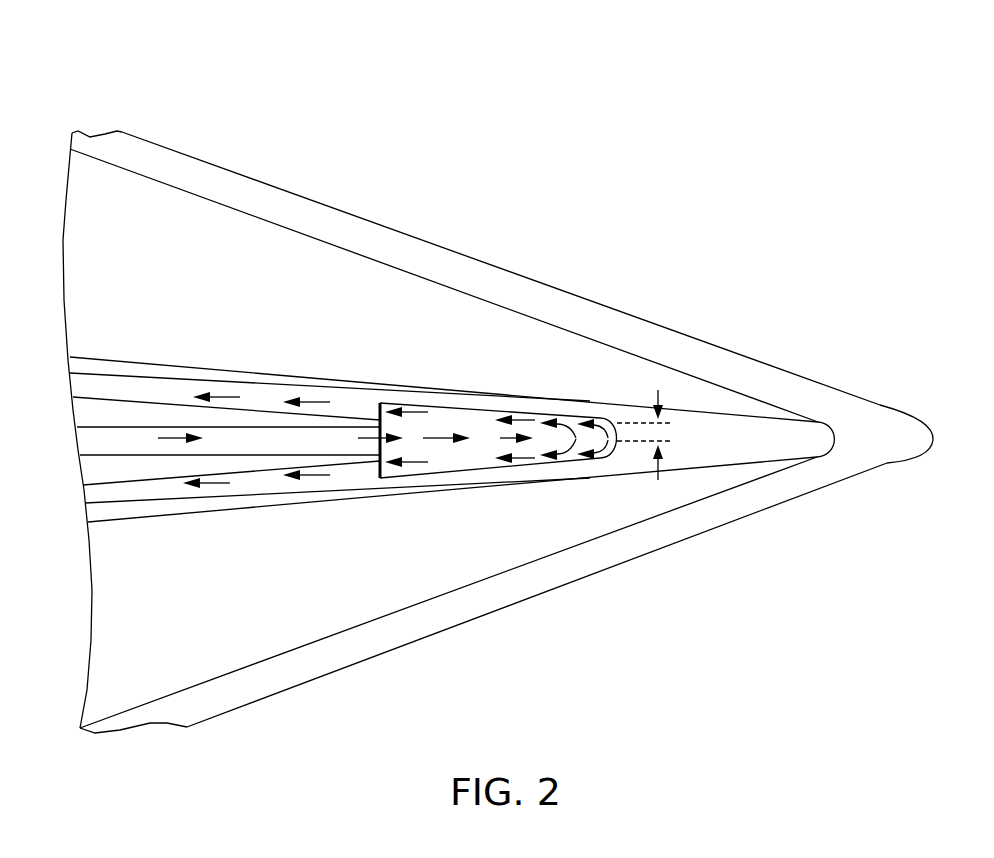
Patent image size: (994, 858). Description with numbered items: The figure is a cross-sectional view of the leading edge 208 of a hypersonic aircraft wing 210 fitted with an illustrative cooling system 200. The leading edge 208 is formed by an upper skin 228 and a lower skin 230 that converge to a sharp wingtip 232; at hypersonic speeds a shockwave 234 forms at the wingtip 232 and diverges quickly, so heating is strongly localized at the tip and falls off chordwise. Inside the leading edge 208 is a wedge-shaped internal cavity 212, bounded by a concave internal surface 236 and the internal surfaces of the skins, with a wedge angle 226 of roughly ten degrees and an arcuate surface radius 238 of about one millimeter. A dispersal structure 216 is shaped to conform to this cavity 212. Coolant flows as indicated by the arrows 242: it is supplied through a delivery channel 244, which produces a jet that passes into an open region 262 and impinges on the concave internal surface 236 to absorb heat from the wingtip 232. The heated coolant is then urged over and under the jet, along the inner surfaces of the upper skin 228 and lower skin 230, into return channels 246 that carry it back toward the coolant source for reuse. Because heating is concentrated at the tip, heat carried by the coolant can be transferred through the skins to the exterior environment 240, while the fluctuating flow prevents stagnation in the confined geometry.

The cooling system 200 is at (114, 102).
The leading edge 208 is at (545, 530).
The wing 210 is at (580, 246).
The internal cavity 212 is at (452, 418).
The dispersal structure 216 is at (113, 493).
The wedge angle 226 is at (232, 386).
The upper skin 228 is at (157, 372).
The lower skin 230 is at (328, 492).
The wingtip 232 is at (783, 443).
The shockwave 234 is at (350, 228).
The concave internal surface 236 is at (620, 442).
The radius 238 is at (657, 394).
The exterior environment 240 is at (92, 254).
The arrows 242 is at (318, 403).
The delivery channel 244 is at (93, 438).
The return channels 246 is at (92, 383).
The open region 262 is at (460, 458).